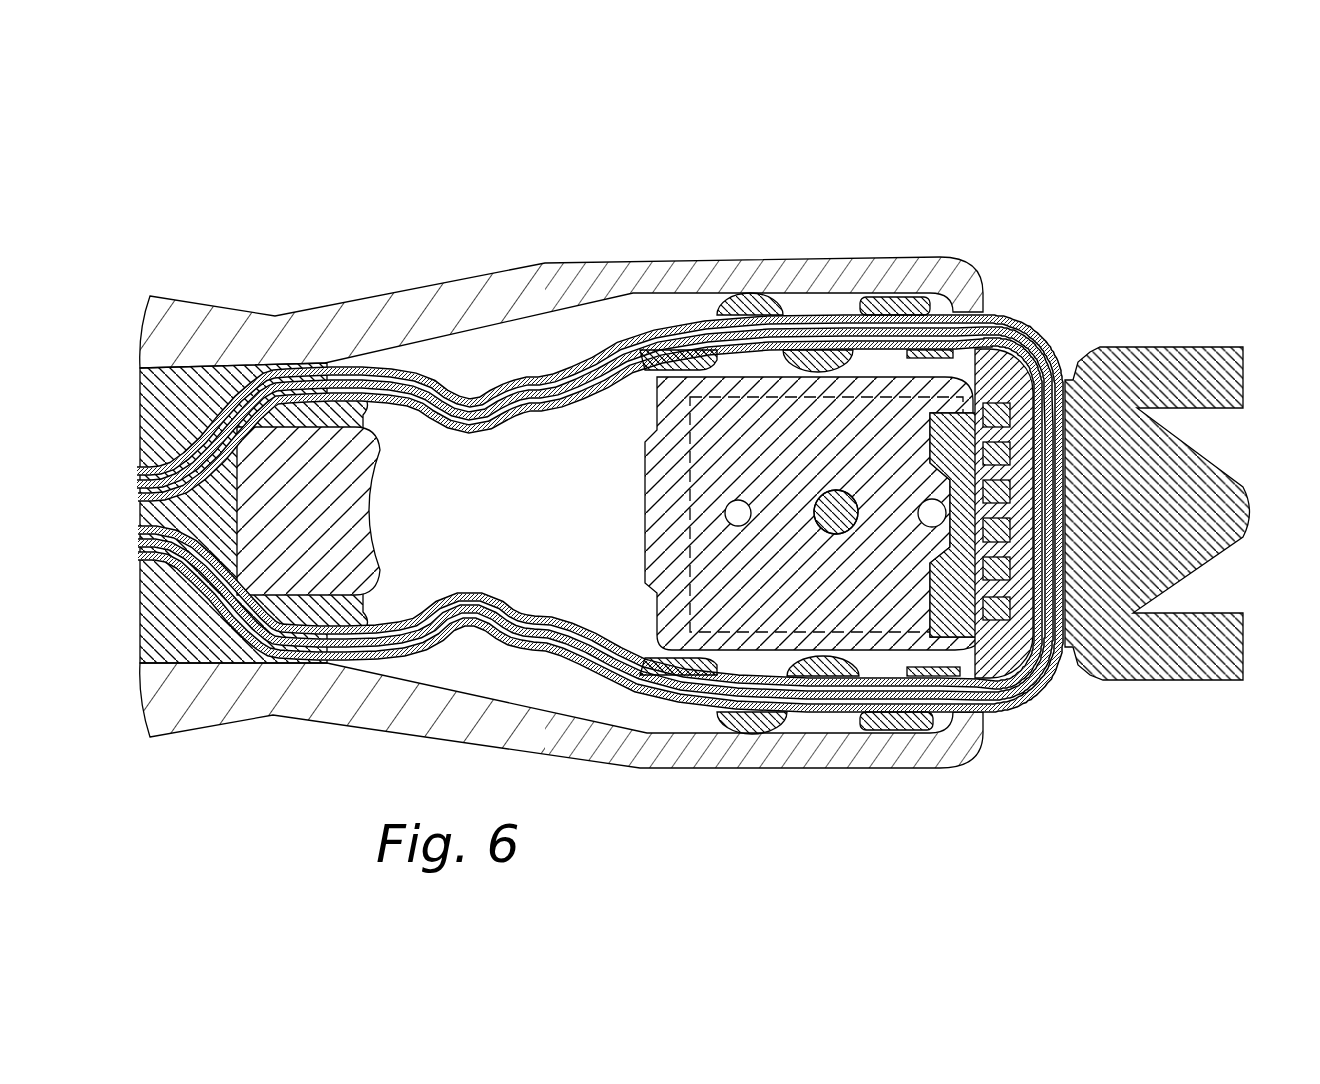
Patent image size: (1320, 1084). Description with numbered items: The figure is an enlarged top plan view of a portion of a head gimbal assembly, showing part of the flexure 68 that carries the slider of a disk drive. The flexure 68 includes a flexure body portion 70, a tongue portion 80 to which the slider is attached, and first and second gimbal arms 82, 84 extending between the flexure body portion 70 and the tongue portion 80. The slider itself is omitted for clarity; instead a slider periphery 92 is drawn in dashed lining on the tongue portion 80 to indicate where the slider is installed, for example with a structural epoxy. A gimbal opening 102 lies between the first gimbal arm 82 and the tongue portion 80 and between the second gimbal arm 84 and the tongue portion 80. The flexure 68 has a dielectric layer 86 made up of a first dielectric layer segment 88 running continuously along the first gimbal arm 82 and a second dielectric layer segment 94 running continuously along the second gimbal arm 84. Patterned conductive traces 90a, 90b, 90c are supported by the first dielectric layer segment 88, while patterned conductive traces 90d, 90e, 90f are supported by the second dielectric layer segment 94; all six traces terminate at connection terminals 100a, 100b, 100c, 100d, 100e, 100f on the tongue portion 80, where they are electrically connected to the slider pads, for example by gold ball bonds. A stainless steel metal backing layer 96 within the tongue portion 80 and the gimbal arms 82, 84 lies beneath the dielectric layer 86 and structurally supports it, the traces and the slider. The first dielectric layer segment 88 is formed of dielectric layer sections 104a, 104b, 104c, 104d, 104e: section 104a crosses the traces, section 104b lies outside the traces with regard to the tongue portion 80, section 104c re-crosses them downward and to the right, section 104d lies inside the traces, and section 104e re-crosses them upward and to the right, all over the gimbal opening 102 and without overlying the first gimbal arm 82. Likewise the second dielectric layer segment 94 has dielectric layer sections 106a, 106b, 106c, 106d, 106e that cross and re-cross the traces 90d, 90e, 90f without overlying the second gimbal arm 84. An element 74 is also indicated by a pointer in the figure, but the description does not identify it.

The flexure 68 is at (1006, 228).
The flexure body portion 70 is at (250, 312).
The connector assembly 74 is at (1101, 228).
The tongue portion 80 is at (650, 487).
The first gimbal arm 82 is at (898, 258).
The second gimbal arm 84 is at (585, 765).
The dielectric layer 86 is at (187, 430).
The first dielectric layer segment 88 is at (598, 348).
The patterned conductive trace 90a is at (642, 328).
The patterned conductive trace 90b is at (664, 336).
The patterned conductive trace 90c is at (683, 347).
The patterned conductive trace 90d is at (687, 702).
The patterned conductive trace 90e is at (676, 697).
The patterned conductive trace 90f is at (648, 710).
The slider periphery 92 is at (913, 648).
The second dielectric layer segment 94 is at (598, 696).
The metal backing layer 96 is at (362, 500).
The connection terminal 100a is at (1057, 363).
The connection terminal 100b is at (1012, 403).
The connection terminal 100c is at (1012, 493).
The connection terminal 100d is at (1012, 553).
The connection terminal 100e is at (1178, 680).
The connection terminal 100f is at (1062, 652).
The gimbal opening 102 is at (617, 425).
The dielectric layer section 104a is at (700, 362).
The dielectric layer section 104b is at (748, 300).
The dielectric layer section 104c is at (812, 355).
The dielectric layer section 104d is at (812, 300).
The dielectric layer section 104e is at (846, 300).
The dielectric layer section 106a is at (696, 683).
The dielectric layer section 106b is at (760, 722).
The dielectric layer section 106c is at (815, 690).
The dielectric layer section 106d is at (822, 680).
The dielectric layer section 106e is at (853, 690).